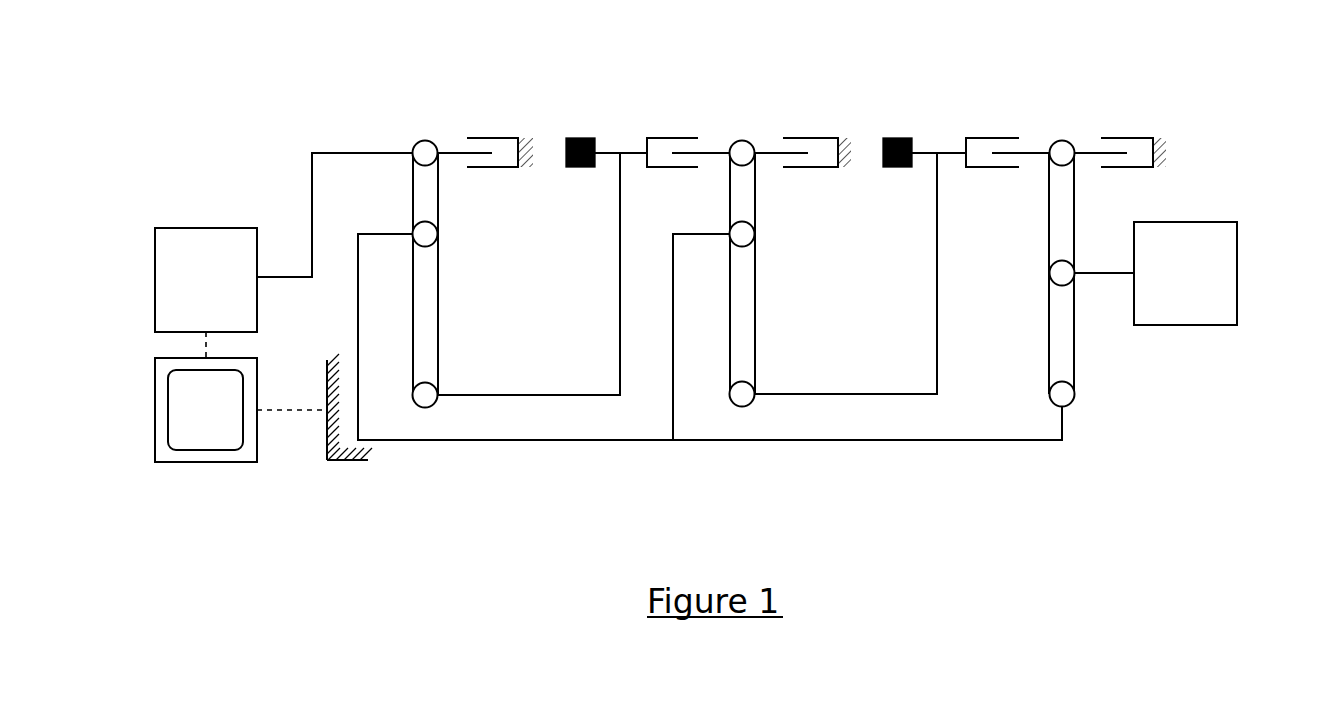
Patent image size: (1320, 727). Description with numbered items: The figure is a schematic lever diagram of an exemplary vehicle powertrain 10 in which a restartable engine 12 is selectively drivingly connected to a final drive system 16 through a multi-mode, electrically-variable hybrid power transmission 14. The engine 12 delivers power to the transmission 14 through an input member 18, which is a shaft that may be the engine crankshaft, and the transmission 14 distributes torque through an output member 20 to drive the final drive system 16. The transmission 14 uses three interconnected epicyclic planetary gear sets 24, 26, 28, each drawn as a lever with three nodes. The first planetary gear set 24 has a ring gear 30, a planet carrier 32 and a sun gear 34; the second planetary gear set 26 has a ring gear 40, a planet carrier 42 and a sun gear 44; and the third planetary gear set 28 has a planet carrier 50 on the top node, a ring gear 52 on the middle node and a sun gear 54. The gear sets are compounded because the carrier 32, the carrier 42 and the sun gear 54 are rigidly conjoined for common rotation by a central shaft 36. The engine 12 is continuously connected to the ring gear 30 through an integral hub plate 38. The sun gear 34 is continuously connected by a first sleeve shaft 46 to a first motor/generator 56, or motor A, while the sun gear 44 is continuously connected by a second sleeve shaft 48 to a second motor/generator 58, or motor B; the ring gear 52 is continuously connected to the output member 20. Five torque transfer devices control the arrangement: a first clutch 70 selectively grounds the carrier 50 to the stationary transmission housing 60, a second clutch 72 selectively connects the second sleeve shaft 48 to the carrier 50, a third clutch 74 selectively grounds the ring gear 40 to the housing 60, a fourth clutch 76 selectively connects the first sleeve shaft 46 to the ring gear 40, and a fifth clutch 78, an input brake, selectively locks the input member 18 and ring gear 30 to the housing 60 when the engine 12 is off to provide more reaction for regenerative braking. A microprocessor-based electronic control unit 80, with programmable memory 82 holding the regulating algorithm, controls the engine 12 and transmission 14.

The vehicle powertrain system 10 is at (208, 112).
The restartable engine 12 is at (155, 290).
The multi-mode electrically-variable hybrid power transmission 14 is at (624, 95).
The final drive system 16 is at (1237, 270).
The input member 18 is at (287, 272).
The transmission output member 20 is at (1100, 275).
The first planetary gear set 24 is at (480, 259).
The second planetary gear set 26 is at (768, 264).
The third planetary gear set 28 is at (1046, 258).
The first member of first planetary gear set 30 is at (425, 140).
The second member of first planetary gear set 32 is at (438, 236).
The third member of first planetary gear set 34 is at (430, 407).
The central shaft 36 is at (550, 440).
The integral hub plate 38 is at (355, 150).
The first member of second planetary gear set 40 is at (742, 140).
The second member of second planetary gear set 42 is at (755, 236).
The third member of second planetary gear set 44 is at (742, 407).
The first sleeve shaft 46 is at (582, 395).
The second sleeve shaft 48 is at (905, 394).
The first member of third planetary gear set 50 is at (1062, 140).
The second member of third planetary gear set 52 is at (1049, 270).
The third member of third planetary gear set 54 is at (1049, 395).
The first motor/generator assembly 56 is at (580, 168).
The second motor/generator assembly 58 is at (893, 168).
The transmission housing 60 is at (522, 140).
The first torque transfer device 70 is at (1160, 138).
The second torque transfer device 72 is at (1013, 123).
The third torque transfer device 74 is at (840, 140).
The fourth torque transfer device 76 is at (663, 120).
The fifth torque transfer device 78 is at (531, 182).
The electronic control unit 80 is at (155, 378).
The programmable memory 82 is at (168, 435).